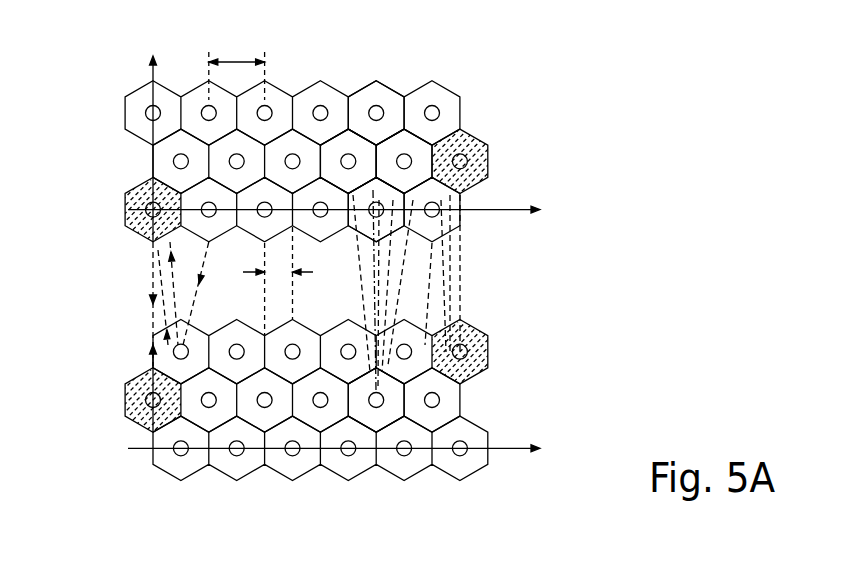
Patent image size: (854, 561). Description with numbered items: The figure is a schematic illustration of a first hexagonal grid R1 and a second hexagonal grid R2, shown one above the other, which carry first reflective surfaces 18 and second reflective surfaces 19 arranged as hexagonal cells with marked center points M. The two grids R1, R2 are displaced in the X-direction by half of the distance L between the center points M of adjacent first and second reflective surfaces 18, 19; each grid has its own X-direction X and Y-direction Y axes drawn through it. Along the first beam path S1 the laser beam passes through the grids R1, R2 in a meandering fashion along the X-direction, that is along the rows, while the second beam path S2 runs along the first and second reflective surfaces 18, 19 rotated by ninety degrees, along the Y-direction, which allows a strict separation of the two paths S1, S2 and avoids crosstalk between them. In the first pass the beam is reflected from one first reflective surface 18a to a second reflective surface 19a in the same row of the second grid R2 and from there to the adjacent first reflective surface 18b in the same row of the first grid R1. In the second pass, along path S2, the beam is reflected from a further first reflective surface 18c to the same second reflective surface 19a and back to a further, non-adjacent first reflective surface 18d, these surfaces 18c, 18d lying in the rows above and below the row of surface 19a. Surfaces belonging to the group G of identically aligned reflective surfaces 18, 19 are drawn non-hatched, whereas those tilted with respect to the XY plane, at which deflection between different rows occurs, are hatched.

The first reflective surfaces 18 is at (422, 78).
The first reflective surface 18a is at (345, 147).
The adjacent first reflective surface 18b is at (418, 152).
The further first reflective surface 18c is at (372, 86).
The further non-adjacent first reflective surface 18d is at (393, 237).
The second reflective surfaces 19 is at (272, 490).
The second reflective surface 19a is at (388, 427).
The center points M is at (203, 110).
The distance L is at (237, 69).
The first beam path S1 is at (460, 272).
The second beam path S2 is at (376, 270).
The first hexagonal grid R1 is at (108, 108).
The second hexagonal grid R2 is at (116, 345).
The group G is at (136, 153).
The X-direction X is at (344, 329).
The Y-direction Y is at (145, 241).